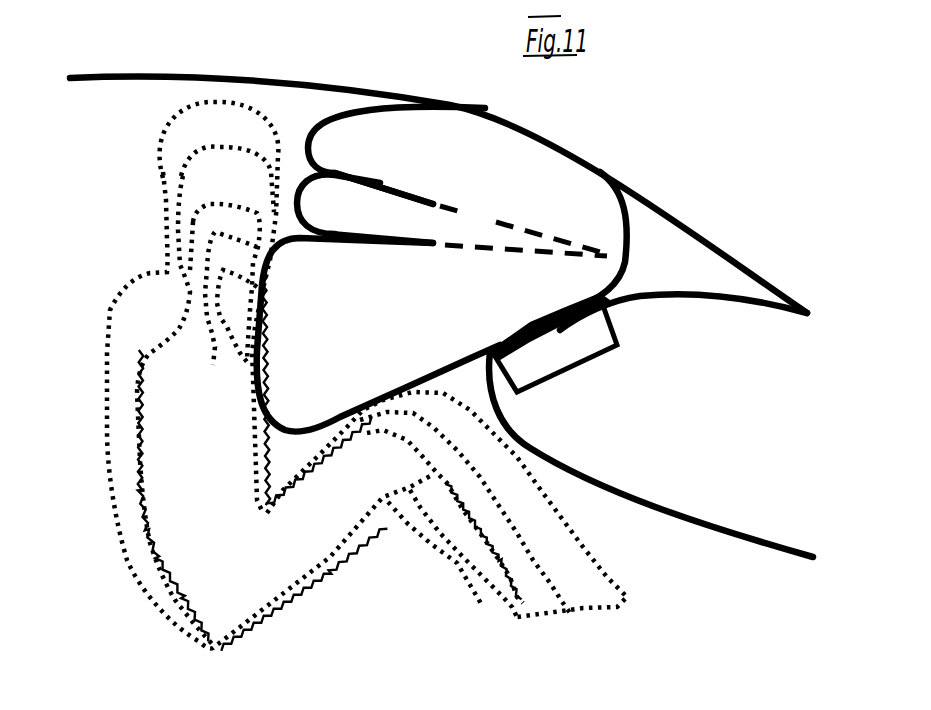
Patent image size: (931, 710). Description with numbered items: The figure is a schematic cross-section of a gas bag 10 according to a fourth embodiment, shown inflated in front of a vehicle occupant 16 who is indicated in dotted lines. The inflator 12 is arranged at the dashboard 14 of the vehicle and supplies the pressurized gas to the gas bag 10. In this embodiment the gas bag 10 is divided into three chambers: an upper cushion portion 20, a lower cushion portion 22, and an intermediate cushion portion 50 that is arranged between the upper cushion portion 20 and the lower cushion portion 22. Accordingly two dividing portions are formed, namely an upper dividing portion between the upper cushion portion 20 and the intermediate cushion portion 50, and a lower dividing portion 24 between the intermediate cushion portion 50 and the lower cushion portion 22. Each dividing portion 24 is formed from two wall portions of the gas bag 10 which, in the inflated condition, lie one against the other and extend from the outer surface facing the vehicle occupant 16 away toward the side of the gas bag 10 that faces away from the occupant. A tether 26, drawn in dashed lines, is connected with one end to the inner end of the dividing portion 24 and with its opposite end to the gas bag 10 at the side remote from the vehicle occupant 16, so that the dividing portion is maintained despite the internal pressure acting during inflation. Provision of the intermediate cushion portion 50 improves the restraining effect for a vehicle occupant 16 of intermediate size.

The gas bag 10 is at (630, 240).
The inflator 12 is at (575, 350).
The dashboard 14 is at (683, 287).
The vehicle occupant 16 is at (202, 497).
The upper cushion portion 20 is at (466, 163).
The lower cushion portion 22 is at (330, 385).
The dividing portion 24 is at (378, 182).
The tether 26 is at (508, 224).
The intermediate cushion portion 50 is at (373, 225).